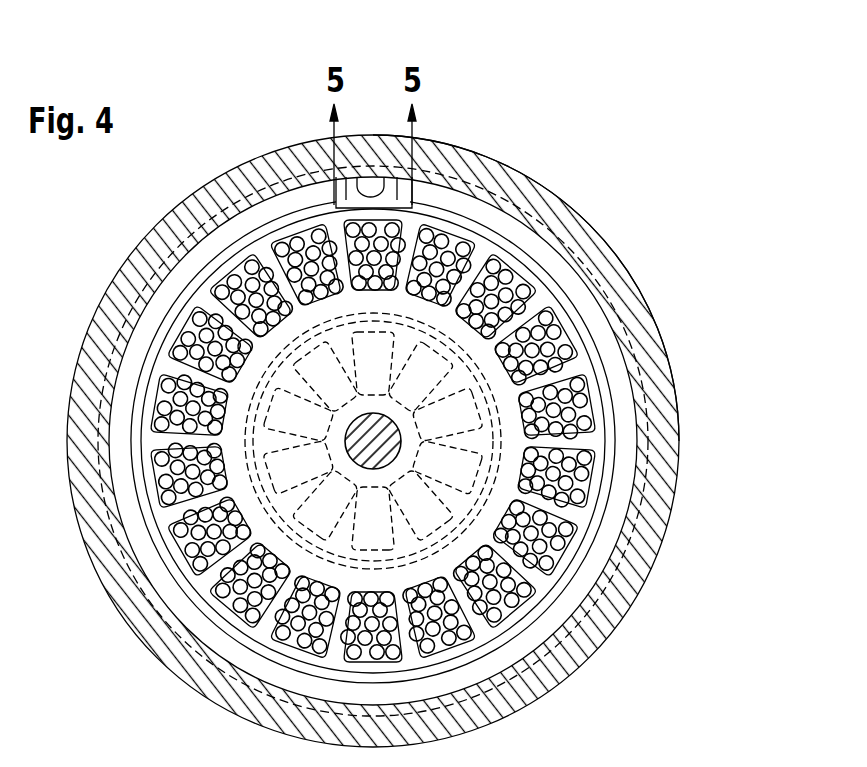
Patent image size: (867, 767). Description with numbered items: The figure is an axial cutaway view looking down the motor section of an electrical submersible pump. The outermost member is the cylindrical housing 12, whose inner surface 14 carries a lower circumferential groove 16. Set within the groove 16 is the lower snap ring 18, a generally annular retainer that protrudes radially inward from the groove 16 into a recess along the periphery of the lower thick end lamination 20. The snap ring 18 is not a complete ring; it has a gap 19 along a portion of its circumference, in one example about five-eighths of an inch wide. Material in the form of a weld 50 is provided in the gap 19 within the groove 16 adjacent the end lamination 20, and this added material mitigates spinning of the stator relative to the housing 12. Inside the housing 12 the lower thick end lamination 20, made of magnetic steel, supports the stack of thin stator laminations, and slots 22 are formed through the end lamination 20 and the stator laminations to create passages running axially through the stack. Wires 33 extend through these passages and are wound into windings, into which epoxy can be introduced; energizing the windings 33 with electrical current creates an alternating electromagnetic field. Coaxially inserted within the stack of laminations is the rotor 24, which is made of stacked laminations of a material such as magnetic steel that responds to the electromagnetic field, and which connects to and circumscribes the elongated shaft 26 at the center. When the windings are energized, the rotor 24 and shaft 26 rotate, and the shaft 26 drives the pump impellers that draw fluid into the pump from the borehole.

The housing 12 is at (678, 460).
The inner surface 14 is at (608, 325).
The lower circumferential groove 16 is at (458, 180).
The lower snap ring 18 is at (512, 233).
The gap 19 is at (348, 204).
The lower thick end lamination 20 is at (573, 517).
The slots 22 is at (587, 413).
The rotor 24 is at (556, 692).
The shaft 26 is at (356, 468).
The wires 33 is at (192, 537).
The weld 50 is at (373, 186).